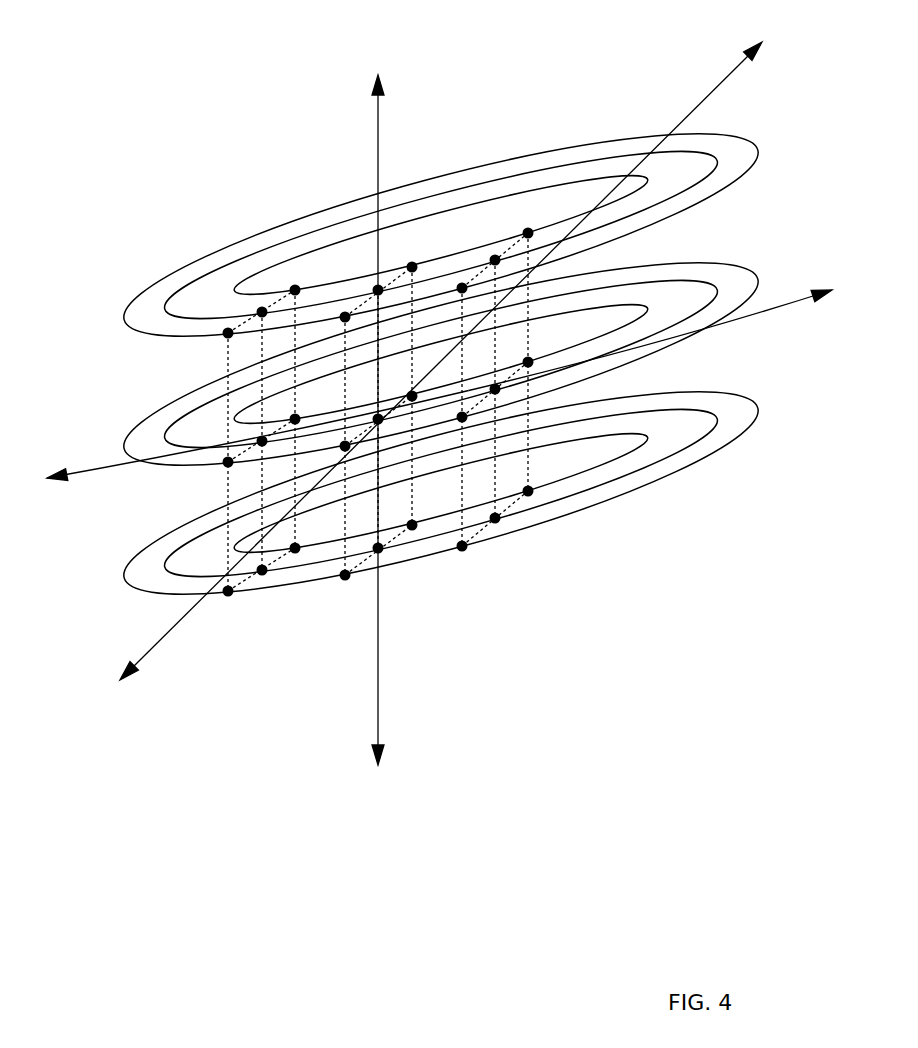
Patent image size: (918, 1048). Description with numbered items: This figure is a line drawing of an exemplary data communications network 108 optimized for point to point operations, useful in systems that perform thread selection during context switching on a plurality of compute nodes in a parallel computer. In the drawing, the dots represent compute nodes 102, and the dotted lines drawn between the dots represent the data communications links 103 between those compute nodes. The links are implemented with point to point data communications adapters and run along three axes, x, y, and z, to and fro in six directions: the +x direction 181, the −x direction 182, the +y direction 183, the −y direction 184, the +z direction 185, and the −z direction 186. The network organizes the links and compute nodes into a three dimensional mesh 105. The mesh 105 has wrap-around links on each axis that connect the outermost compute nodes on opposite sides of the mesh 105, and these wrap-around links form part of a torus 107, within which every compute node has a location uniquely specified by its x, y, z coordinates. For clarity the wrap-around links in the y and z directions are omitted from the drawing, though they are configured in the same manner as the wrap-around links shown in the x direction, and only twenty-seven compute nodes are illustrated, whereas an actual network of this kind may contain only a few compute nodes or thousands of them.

The compute nodes 102 is at (462, 546).
The data communications links 103 is at (228, 362).
The three dimensional mesh 105 is at (295, 290).
The torus 107 is at (205, 235).
The data communications network 108 is at (270, 844).
The +x direction 181 is at (668, 334).
The −x direction 182 is at (242, 456).
The +y direction 183 is at (623, 190).
The −y direction 184 is at (259, 547).
The +z direction 185 is at (378, 220).
The −z direction 186 is at (380, 621).